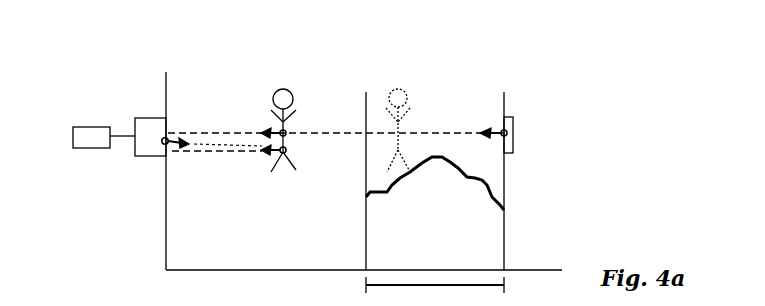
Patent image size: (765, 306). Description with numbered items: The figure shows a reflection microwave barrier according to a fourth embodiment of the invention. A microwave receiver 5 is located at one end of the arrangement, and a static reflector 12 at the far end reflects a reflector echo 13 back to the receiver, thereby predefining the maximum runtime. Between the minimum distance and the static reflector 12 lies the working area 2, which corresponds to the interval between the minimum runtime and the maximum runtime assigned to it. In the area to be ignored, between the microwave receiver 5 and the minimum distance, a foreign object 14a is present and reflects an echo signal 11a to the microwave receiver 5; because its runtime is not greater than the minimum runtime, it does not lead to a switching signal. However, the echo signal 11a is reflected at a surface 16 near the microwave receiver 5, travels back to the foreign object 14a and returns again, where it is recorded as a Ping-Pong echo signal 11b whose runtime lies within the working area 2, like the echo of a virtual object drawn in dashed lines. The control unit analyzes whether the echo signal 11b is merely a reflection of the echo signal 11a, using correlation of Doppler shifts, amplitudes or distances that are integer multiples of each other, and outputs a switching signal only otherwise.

The working area 2 is at (493, 282).
The microwave receiver 5 is at (145, 140).
The echo signal 11a is at (264, 131).
The Ping-Pong echo signal 11b is at (262, 152).
The static reflector 12 is at (514, 117).
The reflector echo 13 is at (478, 132).
The foreign object 14a is at (296, 170).
The surface 16 is at (163, 144).